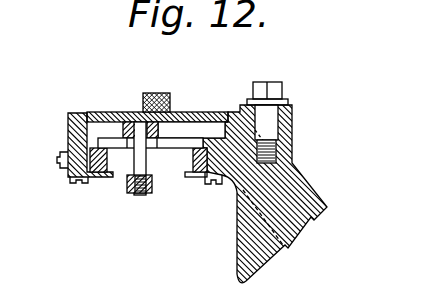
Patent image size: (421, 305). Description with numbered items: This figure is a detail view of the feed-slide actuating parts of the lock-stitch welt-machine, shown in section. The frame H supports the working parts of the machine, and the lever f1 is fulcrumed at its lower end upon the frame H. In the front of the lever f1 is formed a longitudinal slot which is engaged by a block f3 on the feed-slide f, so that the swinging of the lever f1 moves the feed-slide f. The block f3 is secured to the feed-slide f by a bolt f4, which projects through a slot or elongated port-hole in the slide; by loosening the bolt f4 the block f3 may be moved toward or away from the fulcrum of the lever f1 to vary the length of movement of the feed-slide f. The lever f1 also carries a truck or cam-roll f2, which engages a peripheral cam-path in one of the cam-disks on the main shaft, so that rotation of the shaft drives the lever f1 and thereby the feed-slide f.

The frame H is at (293, 162).
The lever f1 is at (200, 114).
The truck or cam-roll f2 is at (166, 95).
The block f3 is at (125, 112).
The feed-slide f is at (171, 170).
The bolt f4 is at (141, 192).